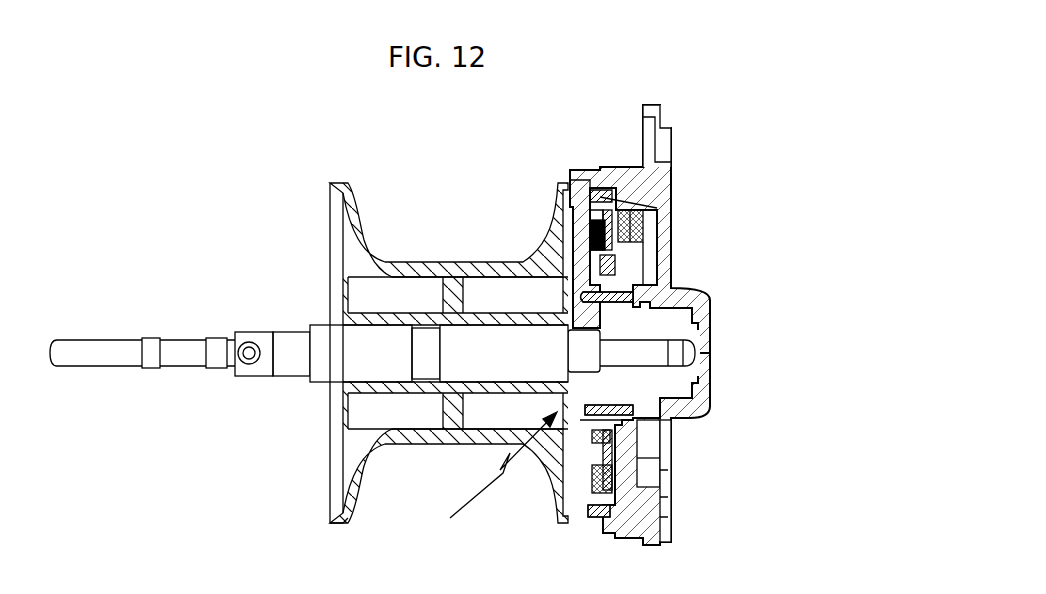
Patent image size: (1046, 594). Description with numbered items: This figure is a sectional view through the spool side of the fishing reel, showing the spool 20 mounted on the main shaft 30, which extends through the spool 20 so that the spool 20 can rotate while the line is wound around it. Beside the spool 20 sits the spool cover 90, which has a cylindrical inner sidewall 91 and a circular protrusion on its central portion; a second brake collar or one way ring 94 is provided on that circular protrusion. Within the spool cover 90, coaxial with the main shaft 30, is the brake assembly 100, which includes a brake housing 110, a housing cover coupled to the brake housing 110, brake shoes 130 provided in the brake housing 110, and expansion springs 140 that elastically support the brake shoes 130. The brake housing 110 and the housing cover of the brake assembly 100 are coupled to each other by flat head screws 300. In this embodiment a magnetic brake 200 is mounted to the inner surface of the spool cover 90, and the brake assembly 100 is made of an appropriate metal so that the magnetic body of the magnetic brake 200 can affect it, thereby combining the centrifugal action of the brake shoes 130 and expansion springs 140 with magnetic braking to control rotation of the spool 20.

The spool 20 is at (392, 272).
The main shaft 30 is at (362, 367).
The spool cover 90 is at (708, 356).
The cylindrical inner sidewall 91 is at (633, 172).
The second brake collar or one way ring 94 is at (650, 398).
The brake assembly 100 is at (488, 480).
The brake housing 110 is at (563, 258).
The brake shoes 130 is at (608, 263).
The expansion springs 140 is at (593, 228).
The magnetic brake 200 is at (628, 217).
The flat head screws 300 is at (603, 440).